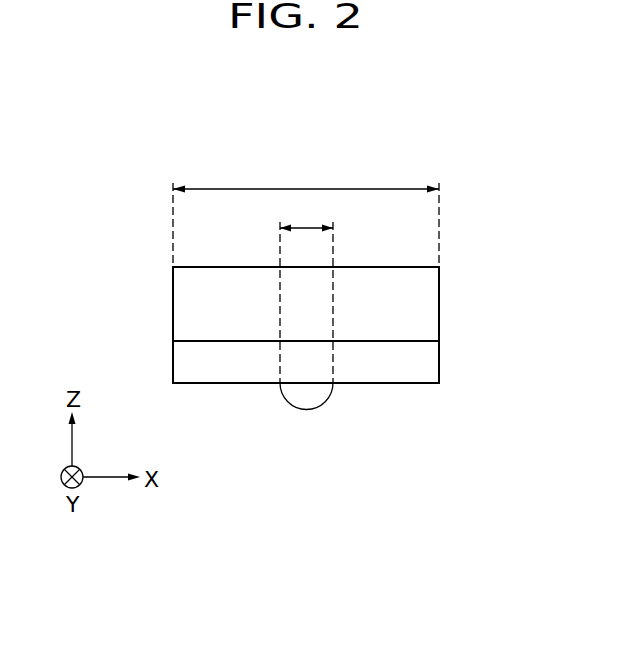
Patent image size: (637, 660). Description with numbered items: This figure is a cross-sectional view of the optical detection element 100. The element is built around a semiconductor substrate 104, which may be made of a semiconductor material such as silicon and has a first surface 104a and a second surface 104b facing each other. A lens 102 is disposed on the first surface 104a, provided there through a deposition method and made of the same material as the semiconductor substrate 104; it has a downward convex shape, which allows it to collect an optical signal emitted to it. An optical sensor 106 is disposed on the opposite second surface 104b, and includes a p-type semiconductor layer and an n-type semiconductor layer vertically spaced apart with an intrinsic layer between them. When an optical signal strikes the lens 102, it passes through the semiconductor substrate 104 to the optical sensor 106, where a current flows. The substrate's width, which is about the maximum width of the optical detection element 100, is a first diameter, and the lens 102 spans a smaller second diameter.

The optical detection element 100 is at (209, 142).
The lens 102 is at (316, 396).
The semiconductor substrate 104 is at (428, 360).
The first surface 104a is at (423, 383).
The second surface 104b is at (425, 341).
The optical sensor 106 is at (428, 292).